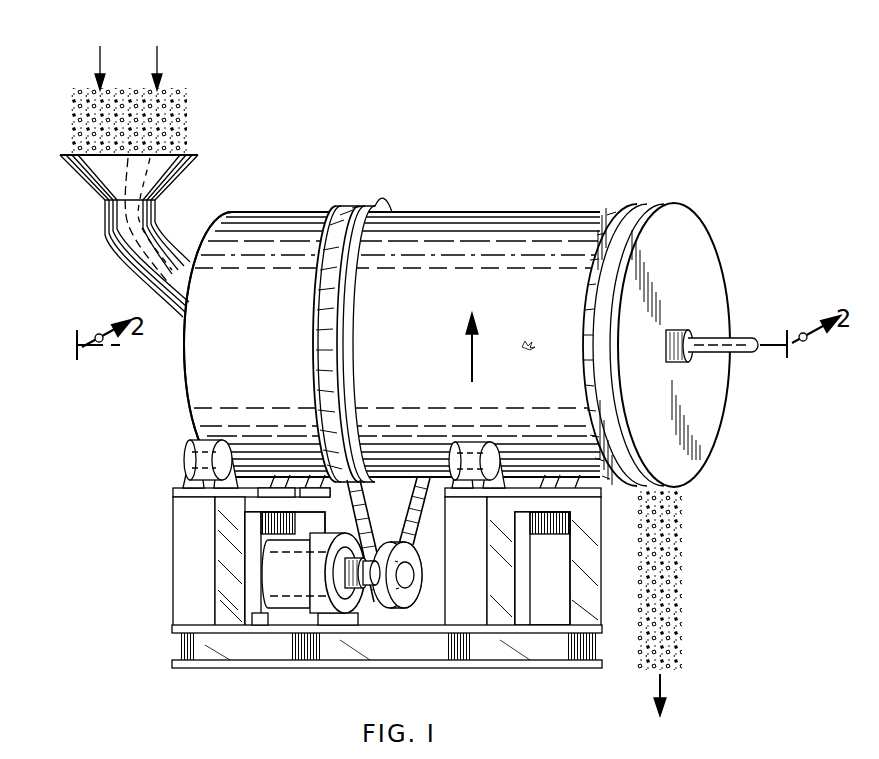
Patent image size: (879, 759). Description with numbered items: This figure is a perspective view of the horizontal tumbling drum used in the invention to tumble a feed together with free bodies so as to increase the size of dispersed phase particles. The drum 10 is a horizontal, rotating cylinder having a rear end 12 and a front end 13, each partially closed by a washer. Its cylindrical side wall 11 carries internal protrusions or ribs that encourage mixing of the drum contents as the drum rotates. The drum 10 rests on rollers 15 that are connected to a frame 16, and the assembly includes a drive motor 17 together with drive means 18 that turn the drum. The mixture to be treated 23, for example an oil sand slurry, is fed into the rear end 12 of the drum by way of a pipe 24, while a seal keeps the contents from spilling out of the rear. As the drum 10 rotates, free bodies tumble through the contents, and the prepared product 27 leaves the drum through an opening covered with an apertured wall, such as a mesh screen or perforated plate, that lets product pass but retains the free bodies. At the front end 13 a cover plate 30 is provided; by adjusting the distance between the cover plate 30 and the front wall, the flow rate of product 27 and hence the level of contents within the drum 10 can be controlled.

The drum 10 is at (392, 319).
The cylindrical side wall 11 is at (297, 212).
The rear end 12 is at (188, 372).
The front end 13 is at (640, 207).
The rollers 15 is at (195, 447).
The frame 16 is at (190, 563).
The drive motor 17 is at (290, 605).
The drive means 18 is at (334, 322).
The mixture to be treated 23 is at (157, 42).
The pipe 24 is at (108, 240).
The product 27 is at (676, 577).
The cover plate 30 is at (706, 244).